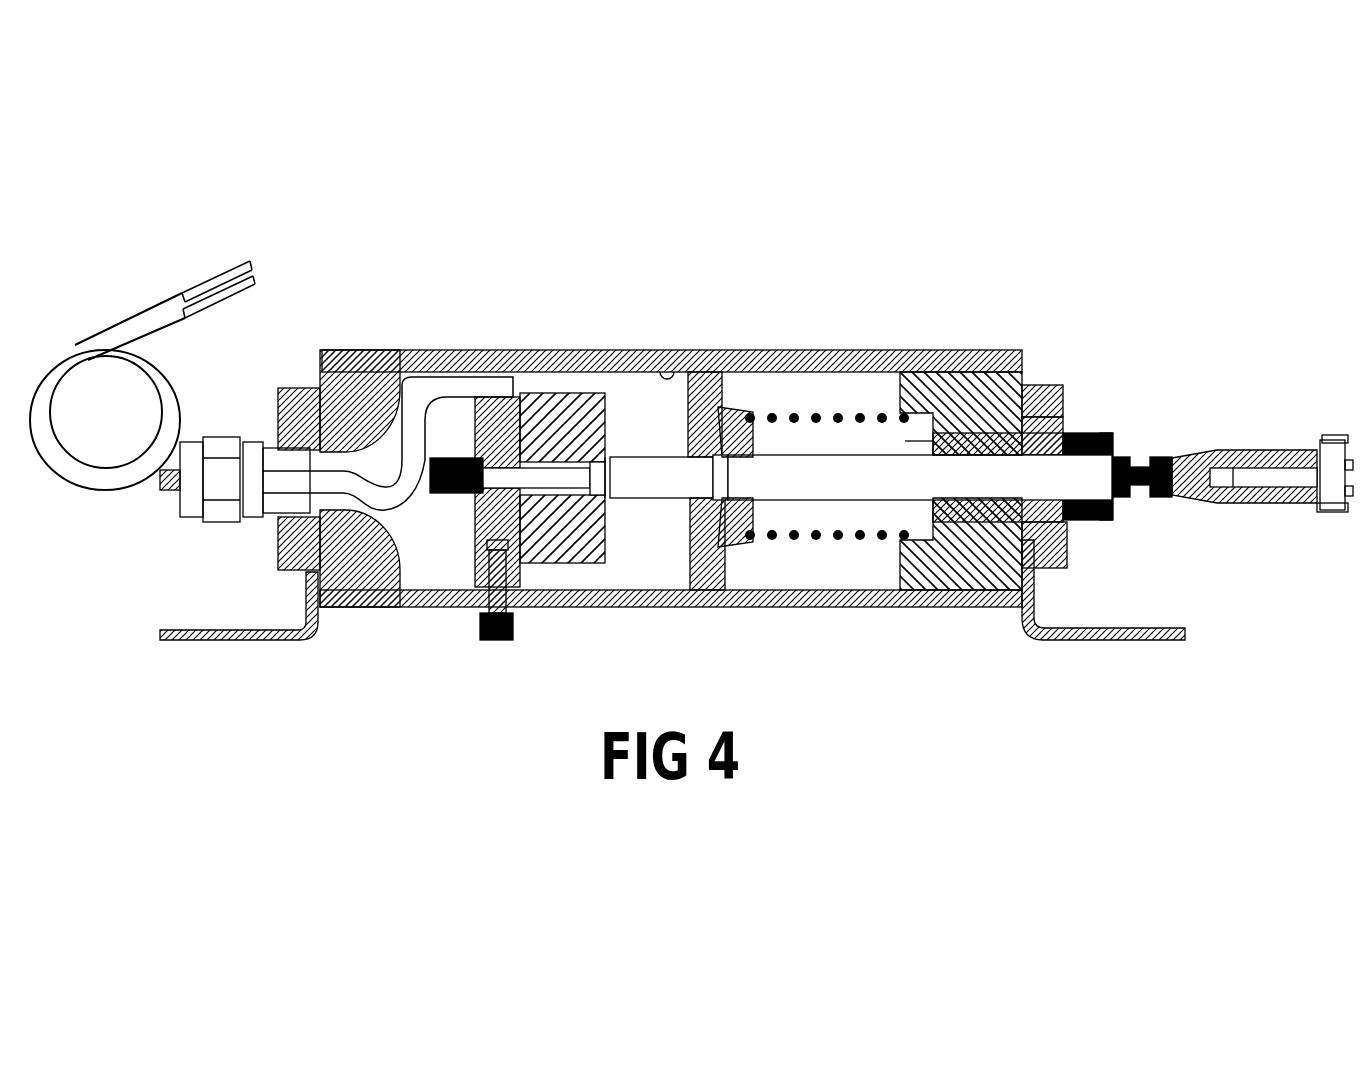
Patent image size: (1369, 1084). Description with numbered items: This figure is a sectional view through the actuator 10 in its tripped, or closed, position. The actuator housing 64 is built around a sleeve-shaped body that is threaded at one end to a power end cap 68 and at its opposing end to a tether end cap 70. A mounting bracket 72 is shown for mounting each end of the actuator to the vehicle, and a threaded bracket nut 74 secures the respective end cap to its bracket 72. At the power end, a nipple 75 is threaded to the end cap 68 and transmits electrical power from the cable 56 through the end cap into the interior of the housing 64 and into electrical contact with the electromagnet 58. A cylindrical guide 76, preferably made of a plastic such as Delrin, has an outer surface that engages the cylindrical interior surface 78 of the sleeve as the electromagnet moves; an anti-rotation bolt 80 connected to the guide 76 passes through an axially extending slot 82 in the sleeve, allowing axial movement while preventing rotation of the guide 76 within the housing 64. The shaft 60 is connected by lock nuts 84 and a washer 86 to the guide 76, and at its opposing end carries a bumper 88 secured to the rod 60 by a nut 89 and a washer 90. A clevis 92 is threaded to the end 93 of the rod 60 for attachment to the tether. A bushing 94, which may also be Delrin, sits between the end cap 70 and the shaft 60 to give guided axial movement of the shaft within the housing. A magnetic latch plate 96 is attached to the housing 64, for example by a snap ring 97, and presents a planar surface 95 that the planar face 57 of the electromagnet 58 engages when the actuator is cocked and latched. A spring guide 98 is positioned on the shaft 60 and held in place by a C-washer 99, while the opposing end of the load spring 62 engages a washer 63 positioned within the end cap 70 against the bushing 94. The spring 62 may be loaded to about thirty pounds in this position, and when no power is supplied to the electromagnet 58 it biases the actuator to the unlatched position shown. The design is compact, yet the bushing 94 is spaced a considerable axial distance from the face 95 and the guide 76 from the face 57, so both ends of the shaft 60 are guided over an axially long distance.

The actuator 10 is at (855, 305).
The cable 56 is at (150, 322).
The planar face 57 is at (610, 450).
The electromagnet 58 is at (610, 423).
The shaft 60 is at (855, 487).
The load spring 62 is at (790, 540).
The washer 63 is at (906, 442).
The housing 64 is at (633, 348).
The power end cap 68 is at (333, 352).
The tether end cap 70 is at (1022, 352).
The mounting bracket 72 is at (303, 642).
The threaded bracket nut 74 is at (285, 390).
The nipple 75 is at (245, 525).
The cylindrical guide 76 is at (218, 517).
The cylindrical interior surface 78 is at (693, 345).
The bolt 80 is at (497, 642).
The axially extending slot 82 is at (553, 605).
The lock nuts 84 is at (437, 500).
The washer 86 is at (557, 352).
The bumper 88 is at (1093, 433).
The nut 89 is at (1123, 495).
The washer 90 is at (1113, 517).
The clevis 92 is at (1287, 448).
The end of rod 93 is at (1207, 447).
The bushing 94 is at (993, 607).
The planar surface 95 is at (688, 565).
The magnetic latch plate 96 is at (703, 593).
The snap ring 97 is at (745, 595).
The spring guide 98 is at (740, 417).
The C-washer 99 is at (688, 512).